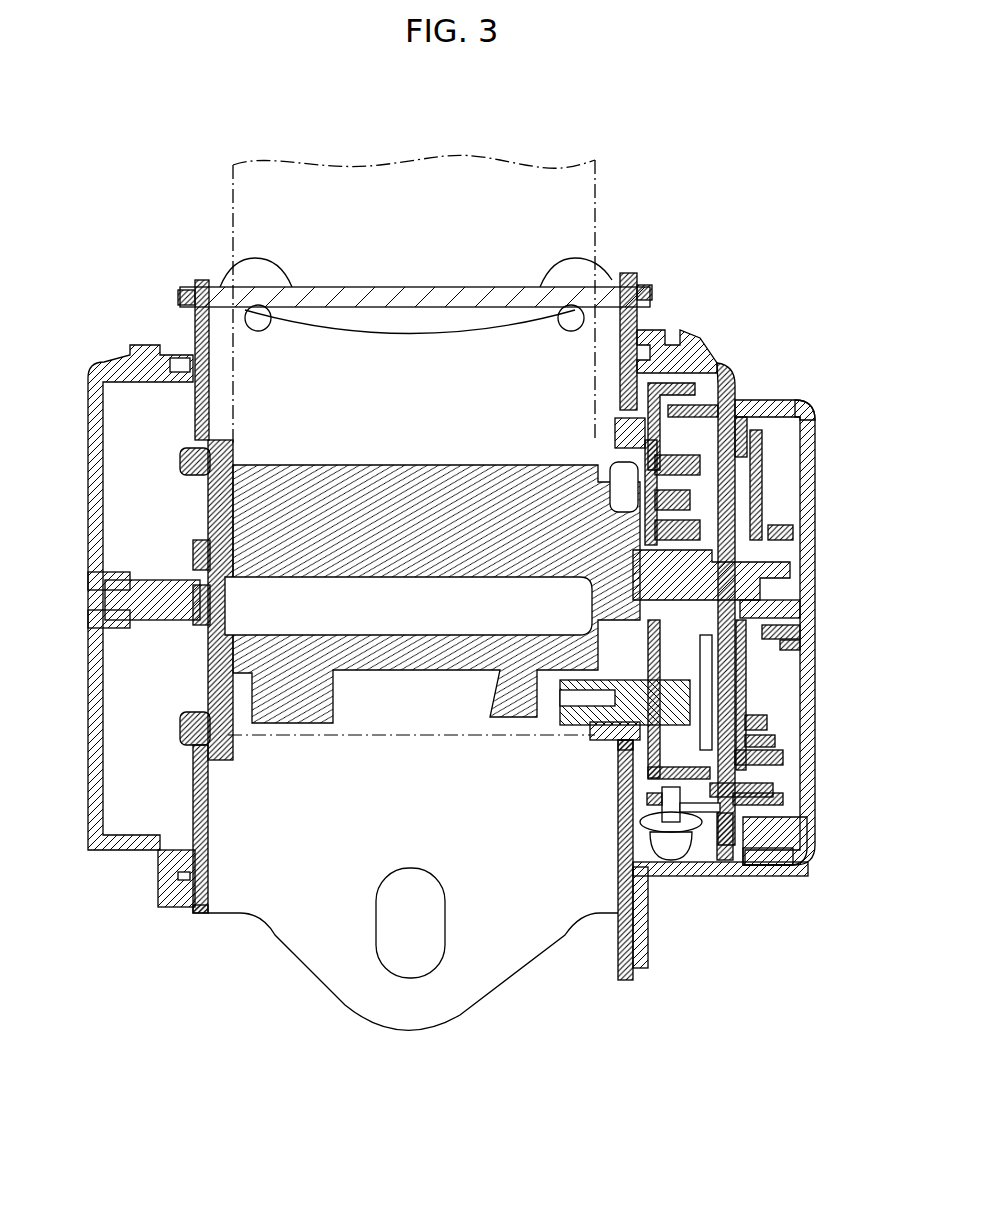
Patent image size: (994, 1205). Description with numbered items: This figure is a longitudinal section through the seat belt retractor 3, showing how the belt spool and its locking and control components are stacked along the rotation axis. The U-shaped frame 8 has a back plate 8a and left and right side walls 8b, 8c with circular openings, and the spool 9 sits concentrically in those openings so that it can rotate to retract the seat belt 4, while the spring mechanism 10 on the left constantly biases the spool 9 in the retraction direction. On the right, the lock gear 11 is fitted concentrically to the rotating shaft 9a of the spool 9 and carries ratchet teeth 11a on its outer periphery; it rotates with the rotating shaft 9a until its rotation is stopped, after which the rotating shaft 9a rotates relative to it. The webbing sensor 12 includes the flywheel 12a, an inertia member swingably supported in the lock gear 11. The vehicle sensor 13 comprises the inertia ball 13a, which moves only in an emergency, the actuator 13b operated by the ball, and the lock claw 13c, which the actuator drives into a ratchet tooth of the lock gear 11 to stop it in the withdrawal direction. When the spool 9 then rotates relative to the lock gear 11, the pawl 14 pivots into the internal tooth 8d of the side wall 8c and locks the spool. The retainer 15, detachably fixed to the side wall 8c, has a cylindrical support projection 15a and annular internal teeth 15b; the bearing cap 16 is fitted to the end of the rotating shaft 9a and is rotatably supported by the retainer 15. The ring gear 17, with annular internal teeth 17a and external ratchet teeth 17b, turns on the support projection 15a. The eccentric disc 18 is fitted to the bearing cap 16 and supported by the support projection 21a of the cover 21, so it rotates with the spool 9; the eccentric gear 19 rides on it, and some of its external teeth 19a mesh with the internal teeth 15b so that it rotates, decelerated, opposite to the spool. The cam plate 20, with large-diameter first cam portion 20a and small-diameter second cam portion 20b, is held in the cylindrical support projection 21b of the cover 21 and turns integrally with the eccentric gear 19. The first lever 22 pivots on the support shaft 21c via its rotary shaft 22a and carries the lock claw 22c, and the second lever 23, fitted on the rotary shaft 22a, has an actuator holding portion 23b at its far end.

The seat belt retractor 3 is at (152, 190).
The seat belt 4 is at (458, 158).
The U-shaped frame 8 is at (345, 1032).
The back plate 8a is at (450, 1022).
The left side wall 8b is at (196, 915).
The right side wall 8c is at (618, 945).
The internal tooth 8d is at (618, 758).
The spool 9 is at (432, 463).
The rotating shaft 9a is at (628, 585).
The spring mechanism 10 is at (113, 370).
The lock gear 11 is at (662, 640).
The ratchet teeth 11a is at (675, 372).
The webbing sensor 12 is at (705, 475).
The flywheel 12a is at (758, 400).
The vehicle sensor 13 is at (700, 845).
The inertia ball 13a is at (673, 855).
The actuator 13b is at (640, 824).
The lock claw 13c is at (668, 807).
The pawl 14 is at (648, 722).
The retainer 15 is at (735, 870).
The support projection 15a is at (750, 668).
The internal teeth 15b is at (775, 745).
The bearing cap 16 is at (772, 640).
The ring gear 17 is at (706, 690).
The annular internal teeth 17a is at (640, 418).
The annular ratchet teeth 17b is at (715, 395).
The eccentric disc 18 is at (810, 565).
The eccentric gear 19 is at (745, 500).
The external teeth 19a is at (767, 722).
The cam plate 20 is at (815, 455).
The first cam portion 20a is at (812, 785).
The second cam portion 20b is at (810, 405).
The cover 21 is at (775, 870).
The support projection 21a is at (812, 605).
The cylindrical support projection 21b is at (812, 650).
The support shaft 21c is at (776, 812).
The first lever 22 is at (688, 862).
The rotary shaft 22a is at (785, 760).
The lock claw 22c is at (650, 800).
The second lever 23 is at (802, 832).
The actuator holding portion 23b is at (792, 868).